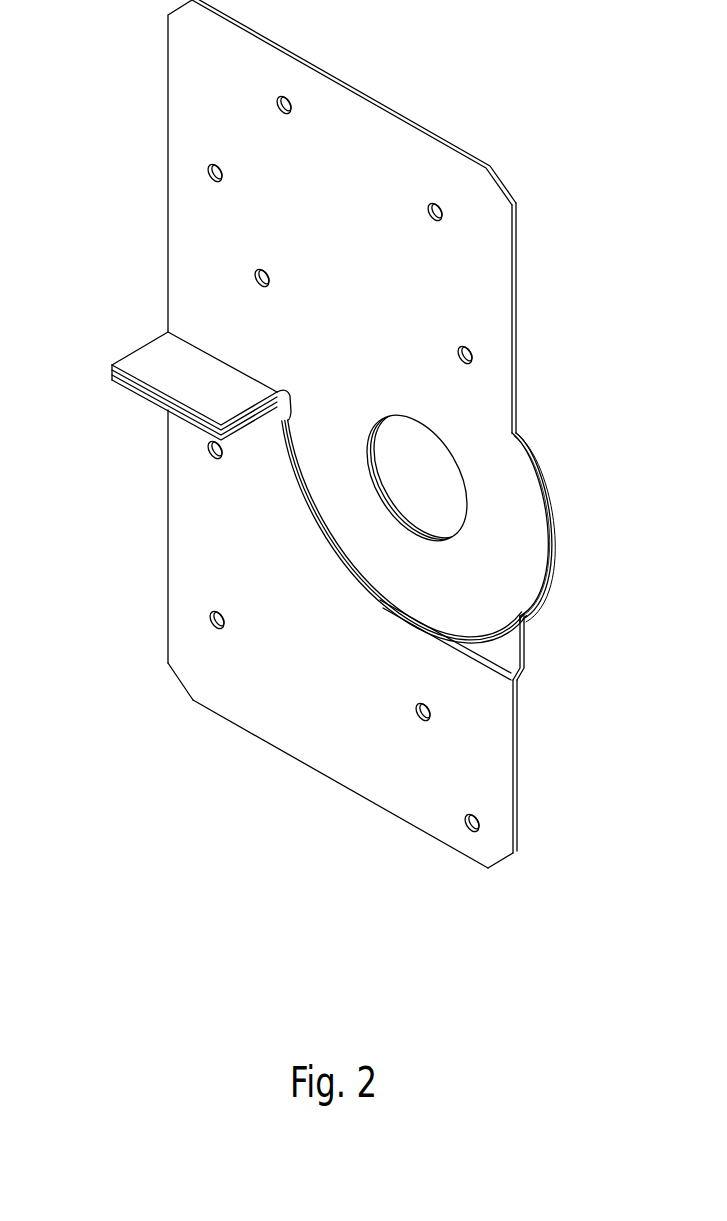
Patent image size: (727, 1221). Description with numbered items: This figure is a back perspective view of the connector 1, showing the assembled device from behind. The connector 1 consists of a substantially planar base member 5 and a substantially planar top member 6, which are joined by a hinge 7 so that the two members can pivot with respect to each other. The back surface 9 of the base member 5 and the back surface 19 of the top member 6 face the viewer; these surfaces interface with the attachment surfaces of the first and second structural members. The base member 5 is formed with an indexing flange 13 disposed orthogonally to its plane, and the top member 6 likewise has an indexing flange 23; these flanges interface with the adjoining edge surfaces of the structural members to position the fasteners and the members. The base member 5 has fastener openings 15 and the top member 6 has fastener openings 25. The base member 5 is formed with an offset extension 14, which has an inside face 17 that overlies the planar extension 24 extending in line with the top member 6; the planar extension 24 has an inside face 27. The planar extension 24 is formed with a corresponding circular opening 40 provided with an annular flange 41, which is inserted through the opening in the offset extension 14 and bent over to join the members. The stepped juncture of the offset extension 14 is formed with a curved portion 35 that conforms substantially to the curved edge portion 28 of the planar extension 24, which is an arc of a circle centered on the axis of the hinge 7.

The connector 1 is at (510, 178).
The base member 5 is at (515, 741).
The top member 6 is at (518, 328).
The hinge 7 is at (548, 517).
The back surface 9 is at (428, 797).
The indexing flange 13 is at (112, 383).
The offset extension 14 is at (519, 660).
The fastener openings 15 is at (222, 456).
The inside face 17 is at (484, 641).
The back surface 19 is at (418, 157).
The indexing flange 23 is at (112, 365).
The planar extension 24 is at (505, 597).
The fastener openings 25 is at (292, 113).
The inside face 27 is at (503, 557).
The curved edge portion 28 is at (342, 553).
The curved portion 35 is at (316, 512).
The corresponding circular opening 40 is at (367, 458).
The annular flange 41 is at (382, 472).